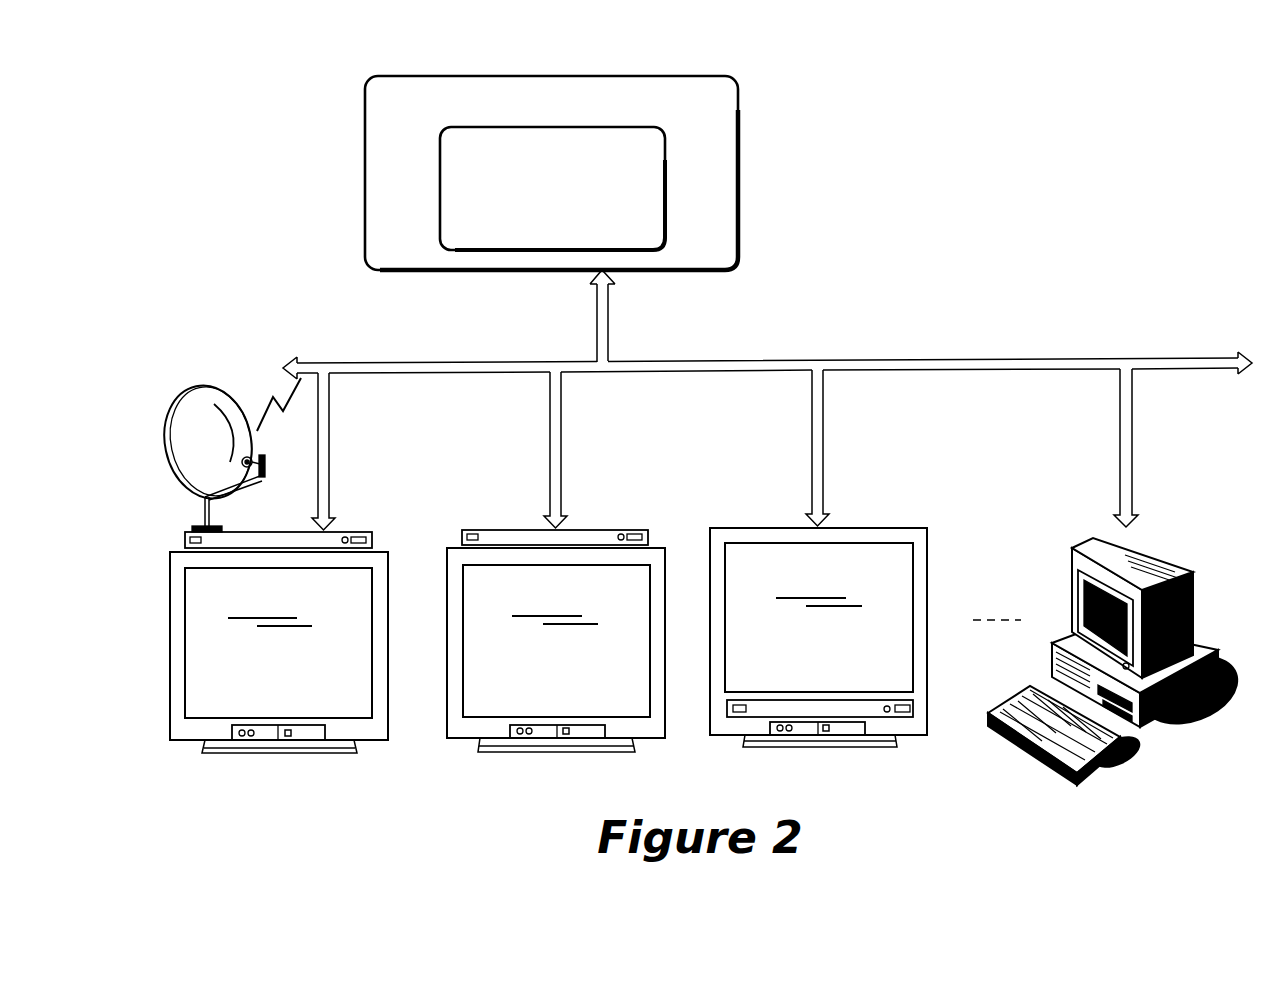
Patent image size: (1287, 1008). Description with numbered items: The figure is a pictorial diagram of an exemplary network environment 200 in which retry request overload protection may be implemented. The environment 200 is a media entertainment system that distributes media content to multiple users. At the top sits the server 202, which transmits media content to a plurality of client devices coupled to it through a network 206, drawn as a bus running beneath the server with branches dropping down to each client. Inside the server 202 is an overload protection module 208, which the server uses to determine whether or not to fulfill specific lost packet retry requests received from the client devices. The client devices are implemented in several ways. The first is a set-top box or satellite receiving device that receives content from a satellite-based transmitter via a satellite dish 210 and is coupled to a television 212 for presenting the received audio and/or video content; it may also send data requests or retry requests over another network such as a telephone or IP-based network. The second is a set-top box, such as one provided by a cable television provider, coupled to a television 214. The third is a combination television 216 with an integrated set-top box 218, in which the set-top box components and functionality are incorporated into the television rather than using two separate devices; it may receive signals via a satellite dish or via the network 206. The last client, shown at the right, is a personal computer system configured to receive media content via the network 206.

The network environment 200 is at (1122, 118).
The server 202 is at (574, 104).
The network 206 is at (956, 359).
The overload protection module 208 is at (568, 229).
The satellite dish 210 is at (216, 388).
The television 212 is at (325, 740).
The television 214 is at (604, 737).
The television 216 is at (865, 735).
The integrated set-top box 218 is at (752, 717).